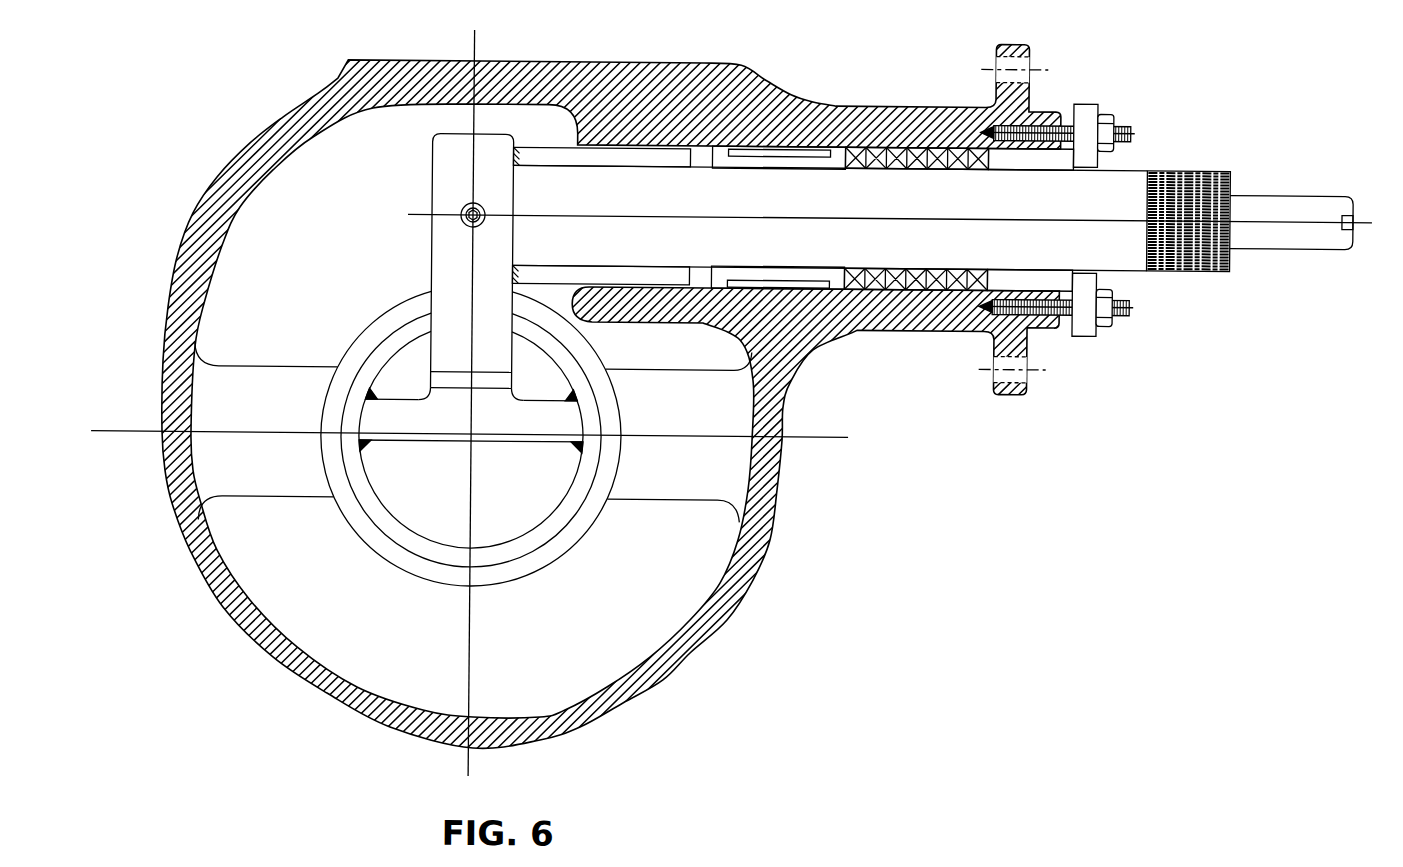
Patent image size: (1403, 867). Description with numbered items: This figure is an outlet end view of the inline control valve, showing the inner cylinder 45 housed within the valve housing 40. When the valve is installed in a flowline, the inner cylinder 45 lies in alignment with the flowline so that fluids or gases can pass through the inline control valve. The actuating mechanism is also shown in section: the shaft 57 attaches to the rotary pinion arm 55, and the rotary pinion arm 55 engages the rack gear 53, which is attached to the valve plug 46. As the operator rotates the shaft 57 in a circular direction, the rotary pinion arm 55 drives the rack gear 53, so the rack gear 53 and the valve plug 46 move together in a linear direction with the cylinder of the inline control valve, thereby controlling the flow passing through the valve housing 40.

The valve housing 40 is at (667, 682).
The inner cylinder 45 is at (605, 482).
The valve plug 46 is at (447, 493).
The rack gear 53 is at (375, 422).
The rotary pinion arm 55 is at (462, 248).
The shaft 57 is at (938, 244).